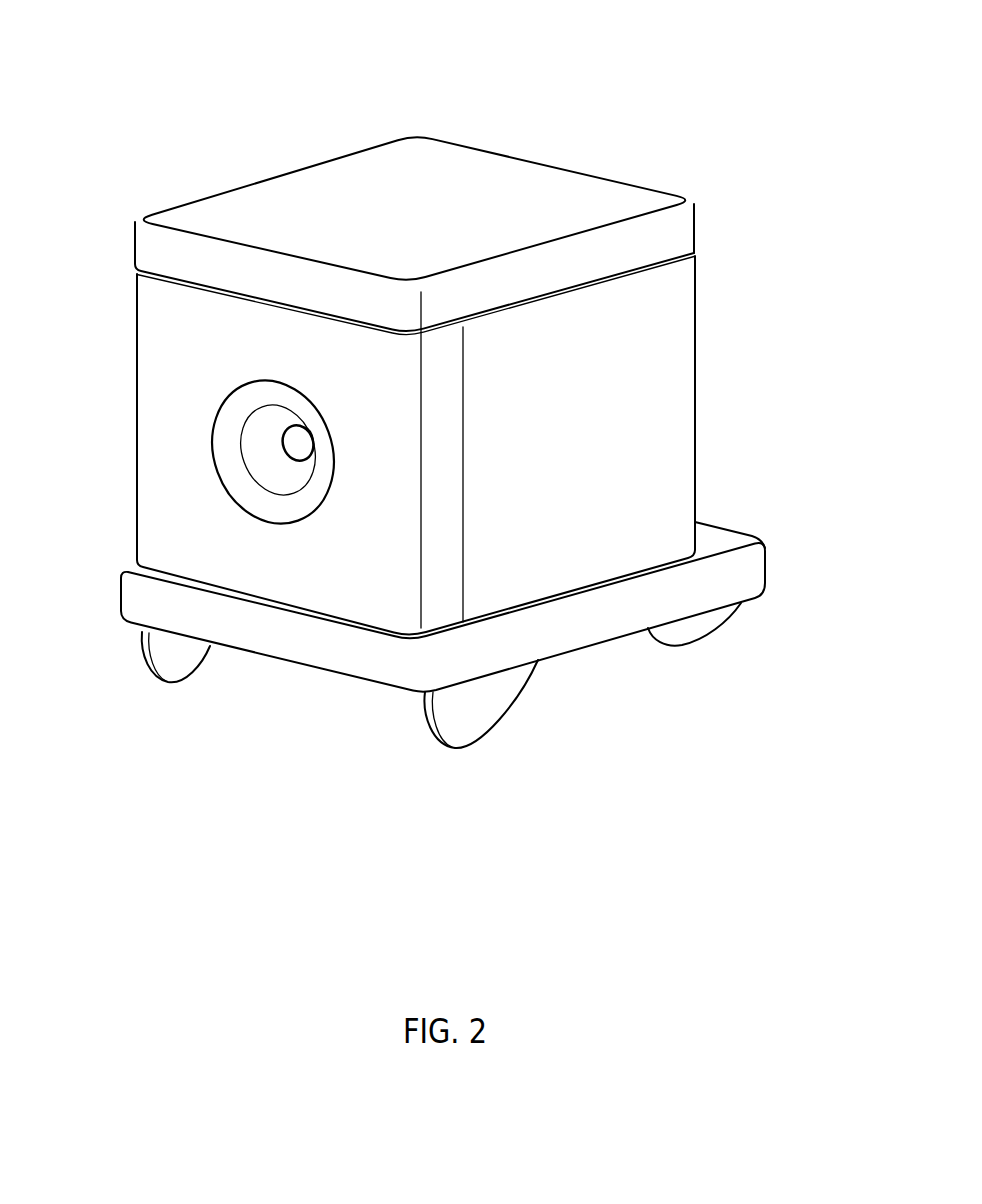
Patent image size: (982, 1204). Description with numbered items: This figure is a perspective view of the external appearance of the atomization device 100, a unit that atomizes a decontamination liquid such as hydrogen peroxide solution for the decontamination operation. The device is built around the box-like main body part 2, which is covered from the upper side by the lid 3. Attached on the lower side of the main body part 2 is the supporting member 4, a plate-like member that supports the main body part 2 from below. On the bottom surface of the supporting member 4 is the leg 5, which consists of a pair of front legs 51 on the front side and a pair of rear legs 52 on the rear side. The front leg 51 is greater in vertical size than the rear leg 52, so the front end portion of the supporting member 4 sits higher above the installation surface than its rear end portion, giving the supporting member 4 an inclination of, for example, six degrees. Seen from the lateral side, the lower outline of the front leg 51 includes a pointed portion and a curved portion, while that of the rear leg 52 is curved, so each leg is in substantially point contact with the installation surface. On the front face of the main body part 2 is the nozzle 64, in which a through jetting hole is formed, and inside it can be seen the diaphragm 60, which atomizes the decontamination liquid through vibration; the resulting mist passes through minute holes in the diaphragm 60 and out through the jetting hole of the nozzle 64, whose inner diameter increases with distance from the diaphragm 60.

The atomization device 100 is at (578, 88).
The main body part 2 is at (700, 424).
The lid 3 is at (608, 172).
The supporting member 4 is at (741, 527).
The leg 5 is at (452, 696).
The front leg 51 is at (180, 662).
The rear leg 52 is at (692, 630).
The diaphragm 60 is at (305, 440).
The nozzle 64 is at (167, 333).